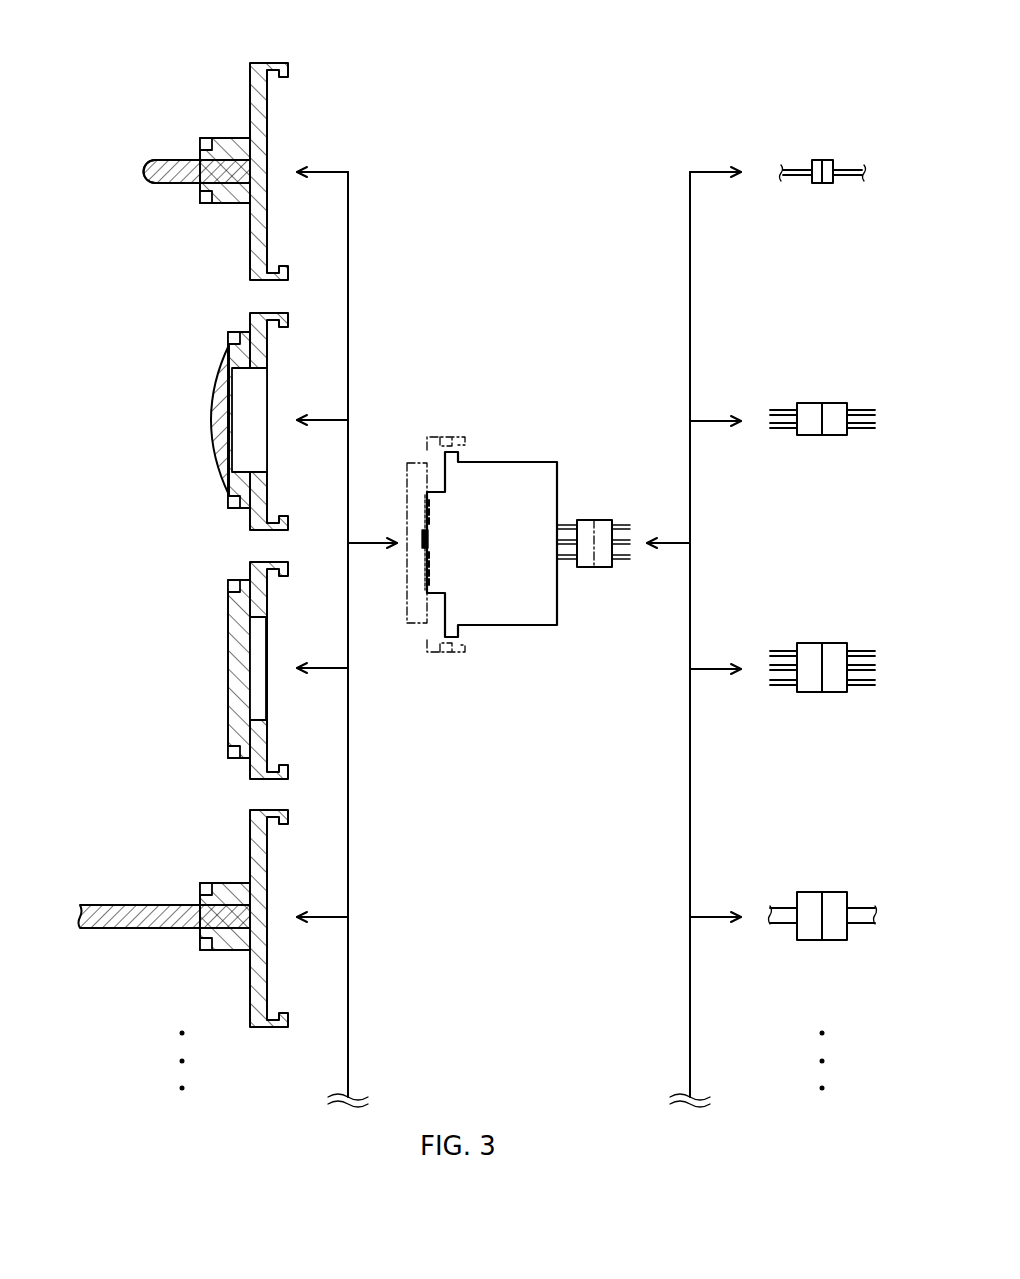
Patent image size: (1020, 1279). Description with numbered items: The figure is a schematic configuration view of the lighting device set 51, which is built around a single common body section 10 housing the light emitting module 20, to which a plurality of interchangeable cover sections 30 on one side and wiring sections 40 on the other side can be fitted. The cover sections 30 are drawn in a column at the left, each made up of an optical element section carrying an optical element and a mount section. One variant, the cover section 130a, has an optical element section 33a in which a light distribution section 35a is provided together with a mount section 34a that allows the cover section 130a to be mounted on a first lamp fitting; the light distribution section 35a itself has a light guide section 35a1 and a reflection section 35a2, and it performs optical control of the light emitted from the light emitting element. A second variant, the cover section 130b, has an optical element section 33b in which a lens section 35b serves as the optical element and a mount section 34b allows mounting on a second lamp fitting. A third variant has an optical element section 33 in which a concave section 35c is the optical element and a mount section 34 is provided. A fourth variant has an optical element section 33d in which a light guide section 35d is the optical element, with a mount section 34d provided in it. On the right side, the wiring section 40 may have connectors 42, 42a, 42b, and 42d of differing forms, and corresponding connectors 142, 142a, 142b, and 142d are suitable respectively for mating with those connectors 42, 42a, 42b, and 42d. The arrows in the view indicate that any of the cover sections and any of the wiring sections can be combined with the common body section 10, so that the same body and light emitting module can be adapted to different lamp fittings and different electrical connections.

The lighting device set 51 is at (557, 87).
The body section 10 is at (528, 632).
The light emitting module 20 is at (415, 530).
The cover section 30 is at (362, 192).
The wiring section 40 is at (668, 192).
The cover section 130a is at (310, 95).
The cover section 130b is at (305, 335).
The optical element section 33a is at (187, 192).
The mount section 34a is at (207, 202).
The light distribution section 35a is at (232, 83).
The light guide section 35a1 is at (177, 165).
The reflection section 35a2 is at (147, 173).
The optical element section 33b is at (205, 473).
The mount section 34b is at (227, 502).
The lens section 35b is at (215, 413).
The optical element section 33 is at (227, 730).
The mount section 34 is at (228, 752).
The concave section 35c is at (243, 703).
The optical element section 33d is at (198, 933).
The mount section 34d is at (207, 947).
The light guide section 35d is at (98, 915).
The connector 42a is at (817, 183).
The connector 142a is at (828, 184).
The connector 42b is at (811, 436).
The connector 142b is at (833, 436).
The connector 42 is at (811, 693).
The connector 142 is at (833, 693).
The connector 42d is at (811, 941).
The connector 142d is at (833, 941).